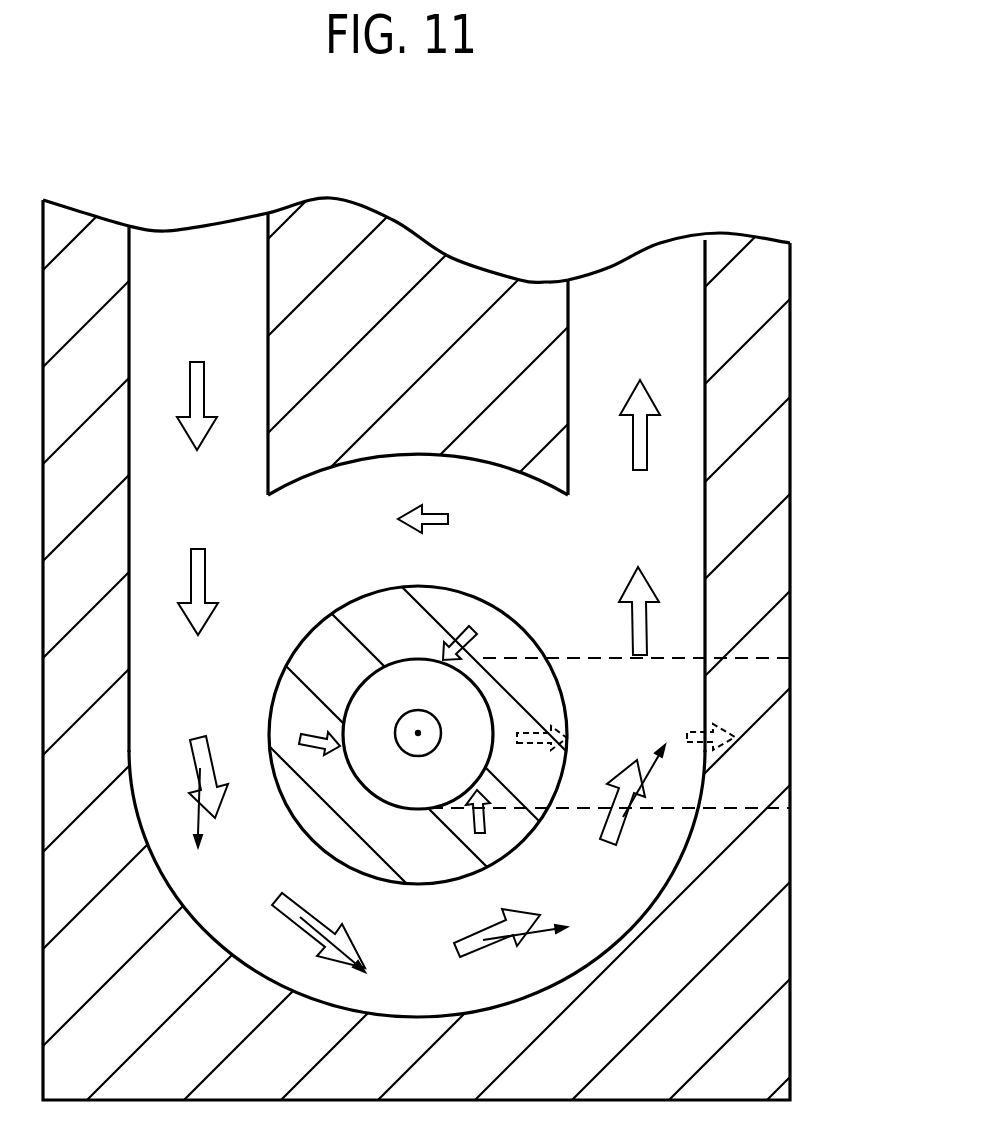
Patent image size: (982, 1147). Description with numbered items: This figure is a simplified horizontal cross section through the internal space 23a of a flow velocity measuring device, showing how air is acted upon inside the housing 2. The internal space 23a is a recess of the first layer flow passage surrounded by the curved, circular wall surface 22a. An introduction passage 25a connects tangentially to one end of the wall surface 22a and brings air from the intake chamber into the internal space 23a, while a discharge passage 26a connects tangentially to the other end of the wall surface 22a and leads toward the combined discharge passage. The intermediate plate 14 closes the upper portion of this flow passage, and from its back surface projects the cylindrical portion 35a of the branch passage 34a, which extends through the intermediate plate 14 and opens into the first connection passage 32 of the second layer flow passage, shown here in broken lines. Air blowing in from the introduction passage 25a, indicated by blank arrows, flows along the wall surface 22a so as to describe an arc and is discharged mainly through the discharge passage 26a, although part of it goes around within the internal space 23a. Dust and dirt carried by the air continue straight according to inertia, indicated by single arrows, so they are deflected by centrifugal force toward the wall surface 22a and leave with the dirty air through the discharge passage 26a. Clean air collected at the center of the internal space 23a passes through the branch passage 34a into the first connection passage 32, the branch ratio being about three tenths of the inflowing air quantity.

The housing 2 is at (468, 258).
The intermediate plate 14 is at (632, 249).
The introduction passage 25a is at (228, 316).
The discharge passage 26a is at (669, 357).
The internal space 23a is at (314, 602).
The wall surface 22a is at (222, 942).
The cylindrical portion 35a is at (436, 588).
The branch passage 34a is at (444, 703).
The first connection passage 32 is at (683, 662).